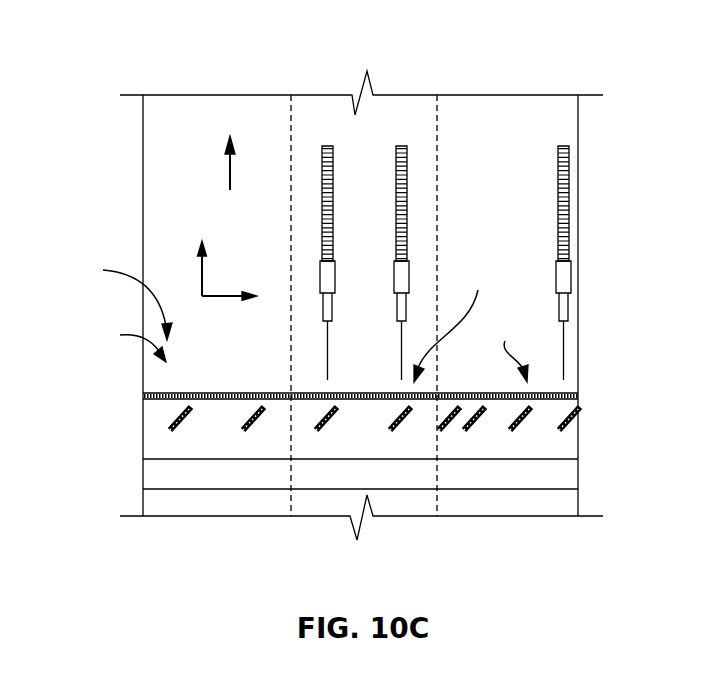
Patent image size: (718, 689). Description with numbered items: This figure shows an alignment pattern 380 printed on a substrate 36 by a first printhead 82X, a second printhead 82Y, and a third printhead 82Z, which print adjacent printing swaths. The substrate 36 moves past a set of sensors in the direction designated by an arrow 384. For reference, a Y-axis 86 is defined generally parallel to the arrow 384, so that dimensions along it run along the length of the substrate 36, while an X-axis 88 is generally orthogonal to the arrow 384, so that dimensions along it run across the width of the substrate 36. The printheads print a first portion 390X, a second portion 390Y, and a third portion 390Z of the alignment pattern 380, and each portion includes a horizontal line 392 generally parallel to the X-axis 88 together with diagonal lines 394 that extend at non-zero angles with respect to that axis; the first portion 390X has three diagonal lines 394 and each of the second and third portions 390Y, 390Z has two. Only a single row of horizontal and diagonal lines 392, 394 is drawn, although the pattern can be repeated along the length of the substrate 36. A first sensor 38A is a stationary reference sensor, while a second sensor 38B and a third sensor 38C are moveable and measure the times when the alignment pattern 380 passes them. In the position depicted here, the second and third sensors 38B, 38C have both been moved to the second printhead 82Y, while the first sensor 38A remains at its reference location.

The substrate 36 is at (563, 107).
The first sensor 38A is at (569, 165).
The second sensor 38B is at (401, 148).
The third sensor 38C is at (327, 148).
The arrow 384 is at (230, 173).
The Y-axis 86 is at (203, 280).
The X-axis 88 is at (210, 302).
The third portion 390Z is at (124, 291).
The alignment pattern 380 is at (118, 342).
The second portion 390Y is at (461, 323).
The first portion 390X is at (507, 348).
The horizontal line 392 is at (236, 393).
The diagonal line 394 is at (177, 435).
The first printhead 82X is at (568, 477).
The second printhead 82Y is at (403, 480).
The third printhead 82Z is at (235, 480).